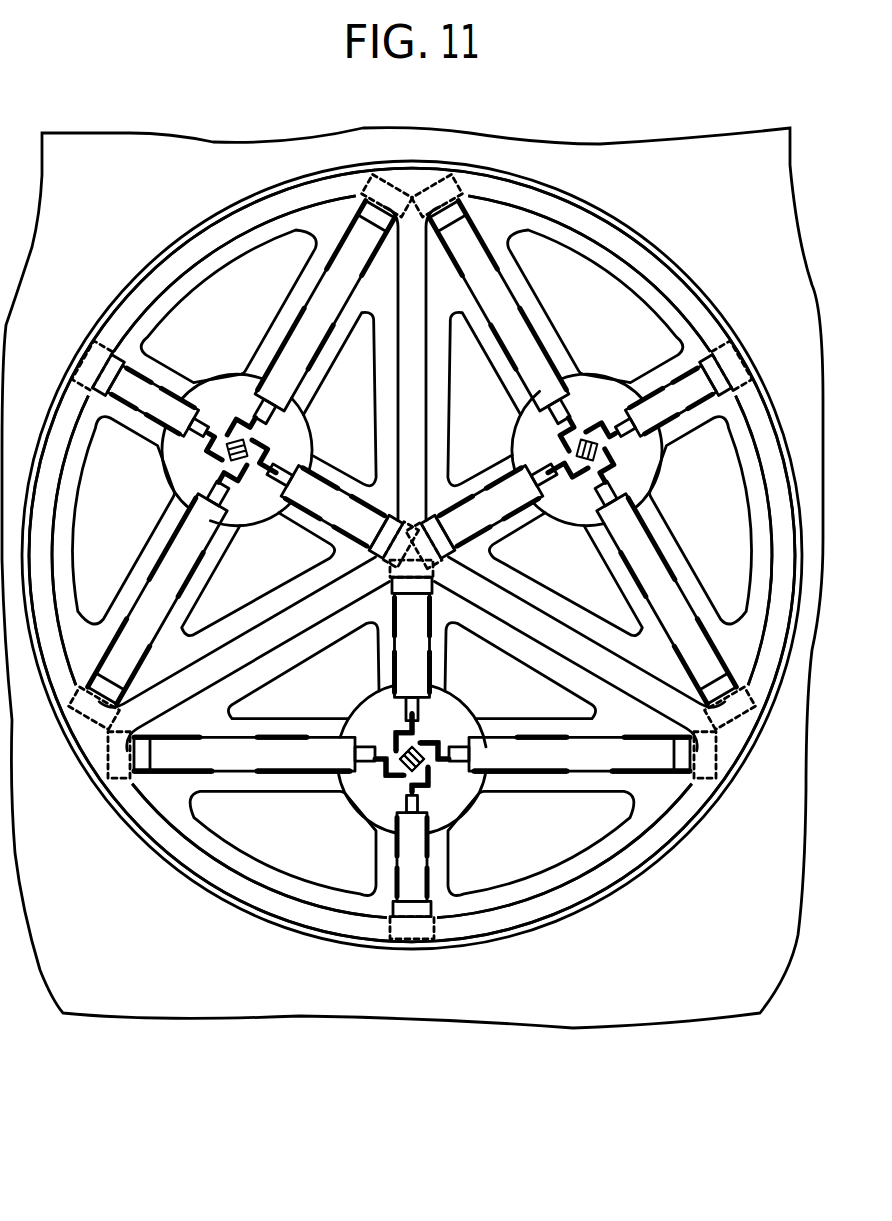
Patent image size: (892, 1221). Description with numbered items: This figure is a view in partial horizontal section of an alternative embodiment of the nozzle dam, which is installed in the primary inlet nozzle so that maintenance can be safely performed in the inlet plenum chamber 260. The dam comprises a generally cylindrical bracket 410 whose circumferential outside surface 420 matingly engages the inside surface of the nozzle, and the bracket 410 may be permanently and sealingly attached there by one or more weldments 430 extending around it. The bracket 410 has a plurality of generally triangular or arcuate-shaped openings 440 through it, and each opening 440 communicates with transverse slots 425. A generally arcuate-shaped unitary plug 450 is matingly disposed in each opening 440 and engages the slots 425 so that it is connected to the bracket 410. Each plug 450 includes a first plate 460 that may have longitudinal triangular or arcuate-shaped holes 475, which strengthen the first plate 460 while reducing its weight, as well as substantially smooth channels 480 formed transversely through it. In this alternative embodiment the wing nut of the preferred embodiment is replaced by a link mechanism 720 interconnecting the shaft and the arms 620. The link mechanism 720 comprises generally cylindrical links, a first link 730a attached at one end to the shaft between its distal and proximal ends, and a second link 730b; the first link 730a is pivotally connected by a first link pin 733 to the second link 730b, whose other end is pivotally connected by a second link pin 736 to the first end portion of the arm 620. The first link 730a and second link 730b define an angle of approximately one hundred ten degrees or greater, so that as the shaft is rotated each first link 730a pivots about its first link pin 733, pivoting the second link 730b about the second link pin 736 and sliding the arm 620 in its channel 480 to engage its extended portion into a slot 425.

The inlet plenum chamber 260 is at (588, 1017).
The bracket 410 is at (652, 848).
The circumferential outside surface 420 is at (631, 882).
The weldment 430 is at (572, 913).
The opening 440 is at (150, 792).
The plug 450 is at (284, 899).
The first plate 460 is at (248, 875).
The hole 475 is at (190, 850).
The channel 480 is at (223, 764).
The arm 620 is at (543, 769).
The transverse slot 425 is at (427, 944).
The link mechanism 720 is at (378, 720).
The first link pin 733 is at (433, 699).
The second link pin 736 is at (394, 712).
The first link 730a is at (440, 713).
The second link 730b is at (440, 797).